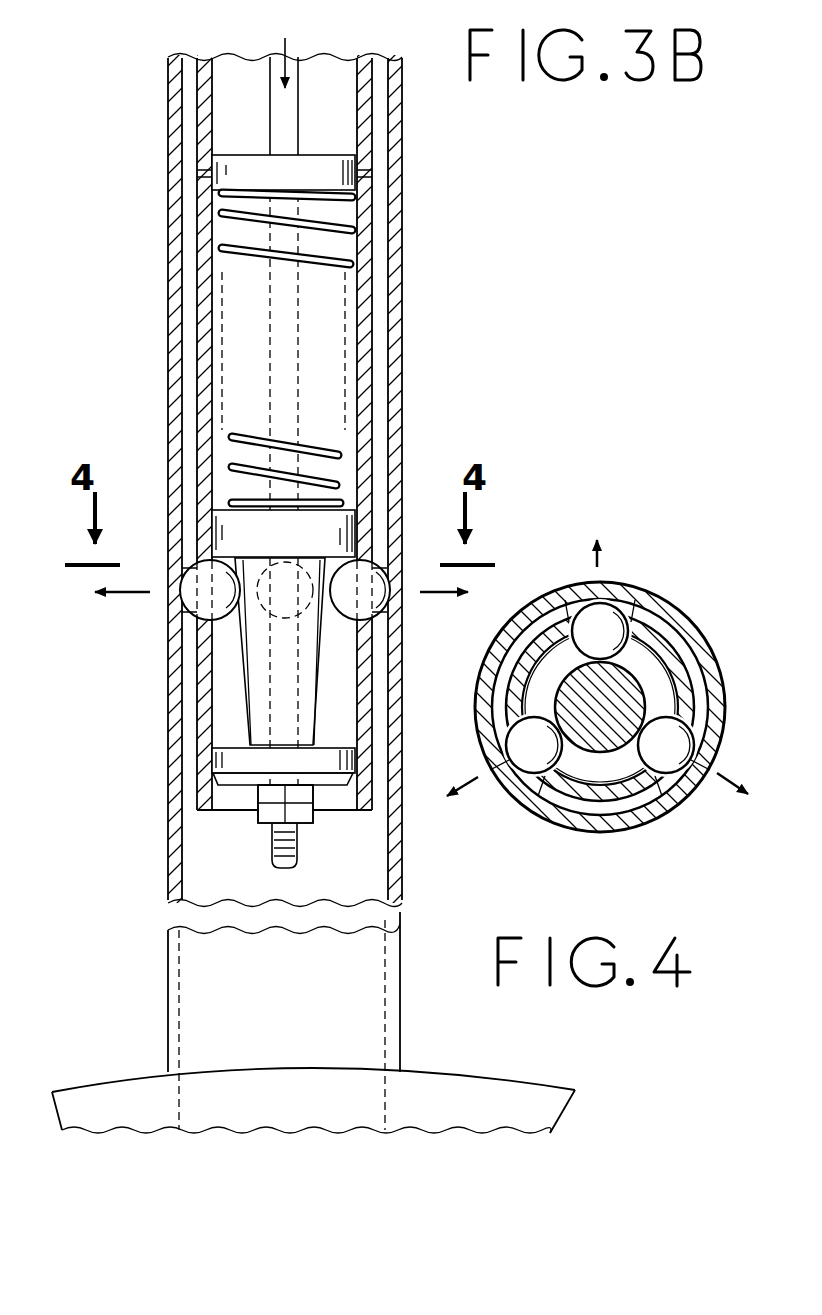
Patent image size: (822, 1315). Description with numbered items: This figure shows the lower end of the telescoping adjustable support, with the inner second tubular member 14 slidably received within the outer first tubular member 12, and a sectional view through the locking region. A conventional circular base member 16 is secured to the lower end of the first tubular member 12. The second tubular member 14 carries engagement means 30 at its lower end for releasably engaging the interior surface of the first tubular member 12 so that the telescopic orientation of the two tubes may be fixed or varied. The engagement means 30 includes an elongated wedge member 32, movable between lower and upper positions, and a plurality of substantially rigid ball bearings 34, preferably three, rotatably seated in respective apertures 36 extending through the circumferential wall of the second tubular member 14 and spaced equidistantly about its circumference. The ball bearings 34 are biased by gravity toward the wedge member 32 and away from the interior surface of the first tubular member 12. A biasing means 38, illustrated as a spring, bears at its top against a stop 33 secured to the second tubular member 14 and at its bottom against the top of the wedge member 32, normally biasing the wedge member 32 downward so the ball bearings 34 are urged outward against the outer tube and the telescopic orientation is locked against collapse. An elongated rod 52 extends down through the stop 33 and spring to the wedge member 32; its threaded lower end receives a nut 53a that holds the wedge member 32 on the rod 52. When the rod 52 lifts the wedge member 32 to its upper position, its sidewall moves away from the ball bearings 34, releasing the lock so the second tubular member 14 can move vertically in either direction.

In FIG. 3B, the first tubular member 12 is at (160, 92).
In FIG. 4, the first tubular member 12 is at (470, 705).
In FIG. 3B, the second tubular member 14 is at (203, 125).
In FIG. 4, the second tubular member 14 is at (663, 810).
In FIG. 3B, the base member 16 is at (78, 1088).
In FIG. 3B, the engagement means 30 is at (198, 635).
In FIG. 4, the engagement means 30 is at (731, 684).
In FIG. 3B, the wedge member 32 is at (250, 692).
In FIG. 4, the wedge member 32 is at (605, 720).
In FIG. 3B, the stop 33 is at (357, 192).
In FIG. 3B, the ball bearings 34 is at (255, 556).
In FIG. 4, the ball bearings 34 is at (600, 624).
In FIG. 3B, the apertures 36 is at (175, 565).
In FIG. 4, the apertures 36 is at (556, 622).
In FIG. 3B, the biasing means 38 is at (333, 263).
In FIG. 3B, the rod 52 is at (283, 113).
In FIG. 3B, the nut 53a is at (313, 822).